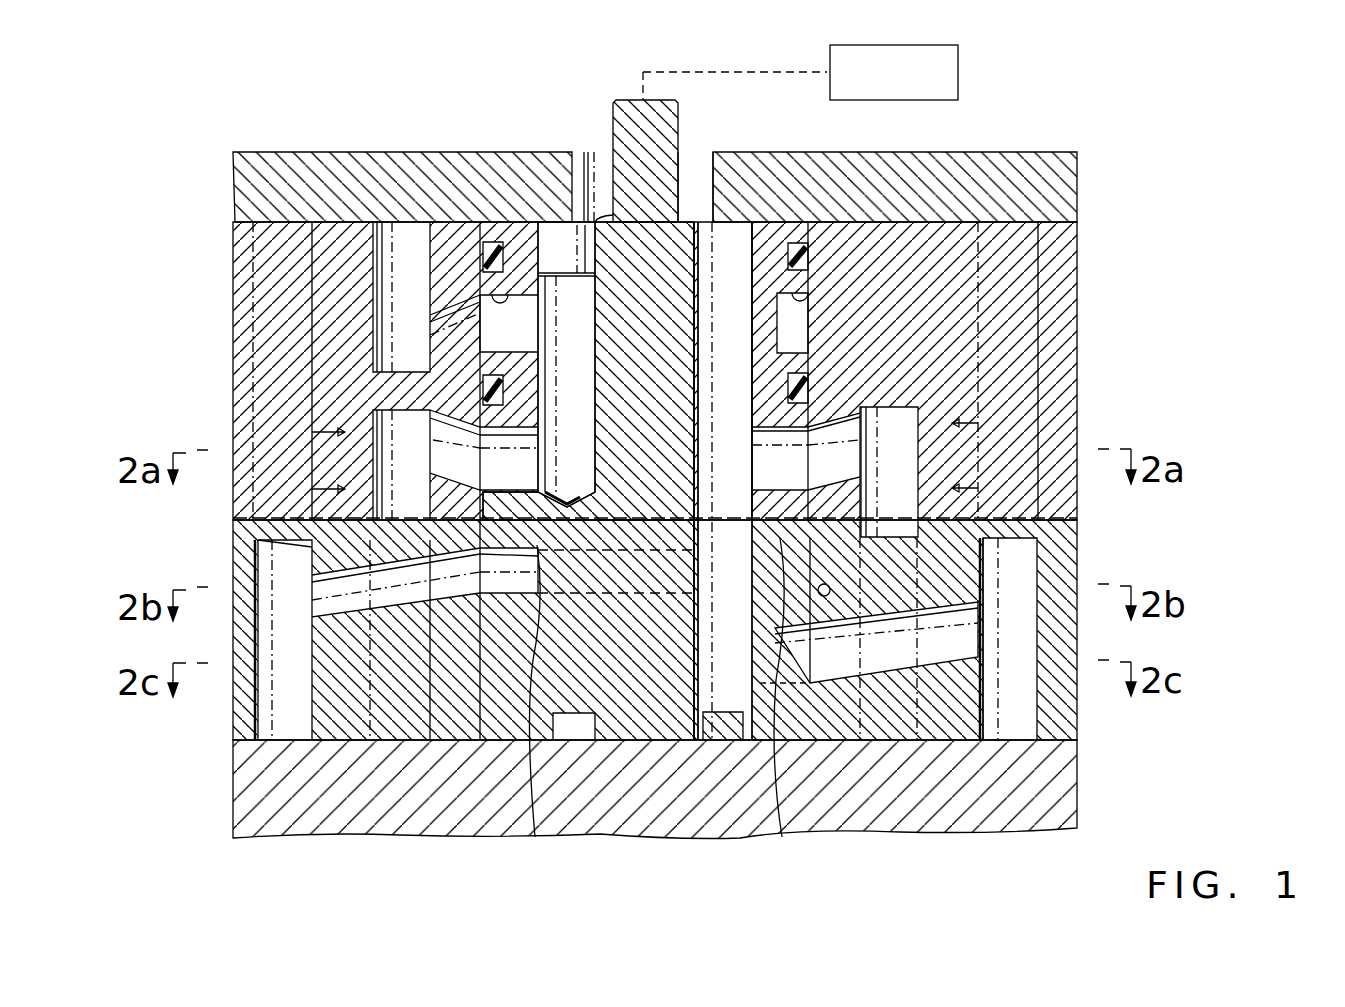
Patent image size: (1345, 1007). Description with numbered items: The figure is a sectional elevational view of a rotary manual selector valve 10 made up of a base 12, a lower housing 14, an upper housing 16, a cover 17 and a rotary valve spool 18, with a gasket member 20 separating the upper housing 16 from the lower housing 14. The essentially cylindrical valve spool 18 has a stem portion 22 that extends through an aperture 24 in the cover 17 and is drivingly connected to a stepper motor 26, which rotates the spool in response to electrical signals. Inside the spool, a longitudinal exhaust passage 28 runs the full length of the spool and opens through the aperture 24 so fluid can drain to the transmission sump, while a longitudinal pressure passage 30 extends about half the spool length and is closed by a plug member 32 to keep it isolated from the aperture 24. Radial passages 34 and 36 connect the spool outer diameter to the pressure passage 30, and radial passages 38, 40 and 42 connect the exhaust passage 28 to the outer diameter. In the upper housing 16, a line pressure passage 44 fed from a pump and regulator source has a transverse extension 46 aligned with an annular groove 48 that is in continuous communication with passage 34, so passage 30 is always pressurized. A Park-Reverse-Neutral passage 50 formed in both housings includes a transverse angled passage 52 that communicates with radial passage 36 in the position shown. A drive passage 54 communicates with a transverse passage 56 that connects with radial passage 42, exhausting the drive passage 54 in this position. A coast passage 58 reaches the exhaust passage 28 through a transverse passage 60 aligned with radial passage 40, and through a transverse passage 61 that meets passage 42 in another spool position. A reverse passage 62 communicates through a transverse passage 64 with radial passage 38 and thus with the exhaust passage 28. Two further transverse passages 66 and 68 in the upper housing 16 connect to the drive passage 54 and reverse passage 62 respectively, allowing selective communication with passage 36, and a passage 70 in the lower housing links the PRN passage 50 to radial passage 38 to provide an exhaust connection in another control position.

The rotary manual selector valve 10 is at (1127, 233).
The base 12 is at (985, 815).
The lower housing 14 is at (355, 705).
The upper housing 16 is at (270, 362).
The cover 17 is at (315, 168).
The rotary valve spool 18 is at (655, 712).
The gasket member 20 is at (232, 518).
The stem portion 22 is at (648, 114).
The aperture 24 is at (712, 168).
The stepper motor 26 is at (947, 87).
The longitudinal exhaust passage 28 is at (742, 233).
The longitudinal pressure passage 30 is at (600, 356).
The plug member 32 is at (562, 240).
The radial passage 34 is at (542, 332).
The radial passage 36 is at (542, 465).
The radial passage 38 is at (793, 680).
The radial passage 40 is at (752, 485).
The radial passage 42 is at (505, 595).
The line pressure passage 44 is at (415, 245).
The transverse extension 46 is at (440, 365).
The annular groove 48 is at (505, 240).
The Park-Reverse-Neutral (PRN) passage 50 is at (383, 458).
The transverse angled passage 52 is at (425, 465).
The drive passage 54 is at (267, 605).
The transverse passage 56 is at (305, 605).
The coast passage 58 is at (927, 440).
The transverse passage 60 is at (877, 472).
The transverse passage 61 is at (824, 597).
The reverse passage 62 is at (1040, 612).
The transverse passage 64 is at (1000, 650).
The transverse passage 66 is at (303, 433).
The transverse passage 68 is at (993, 478).
The passage 70 is at (458, 700).